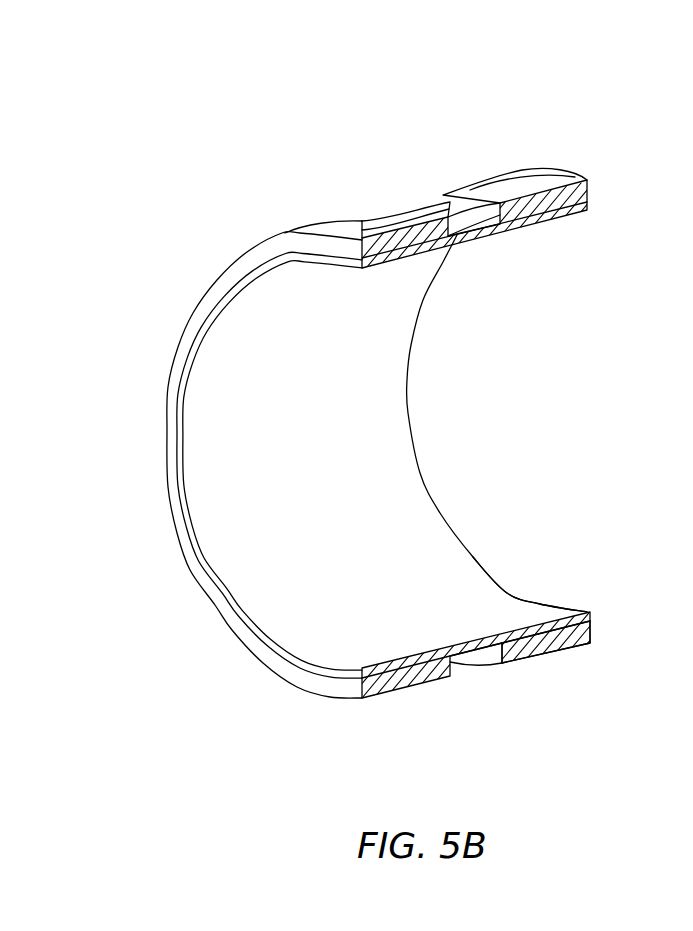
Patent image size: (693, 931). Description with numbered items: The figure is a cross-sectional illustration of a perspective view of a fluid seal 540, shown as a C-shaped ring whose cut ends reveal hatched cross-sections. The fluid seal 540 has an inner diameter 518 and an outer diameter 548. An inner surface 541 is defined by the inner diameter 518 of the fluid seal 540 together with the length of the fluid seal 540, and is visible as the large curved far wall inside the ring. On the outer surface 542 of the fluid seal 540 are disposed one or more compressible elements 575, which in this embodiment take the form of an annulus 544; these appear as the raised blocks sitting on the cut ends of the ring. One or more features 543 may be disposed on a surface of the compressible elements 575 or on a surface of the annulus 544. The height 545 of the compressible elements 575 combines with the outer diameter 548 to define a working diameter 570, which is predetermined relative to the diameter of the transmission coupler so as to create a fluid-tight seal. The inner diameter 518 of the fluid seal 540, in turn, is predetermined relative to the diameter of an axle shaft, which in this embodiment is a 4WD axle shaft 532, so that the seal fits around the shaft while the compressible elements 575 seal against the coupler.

The fluid seal 540 is at (196, 58).
The inner surface 541 is at (357, 433).
The outer surface 542 is at (457, 218).
The features 543 is at (349, 212).
The annulus 544 is at (532, 152).
The height 545 is at (588, 192).
The outer diameter 548 is at (270, 653).
The compressible elements 575 is at (418, 700).
The working diameter 570 is at (167, 442).
The inner diameter 518 is at (193, 513).
The 4WD axle shaft 532 is at (513, 597).